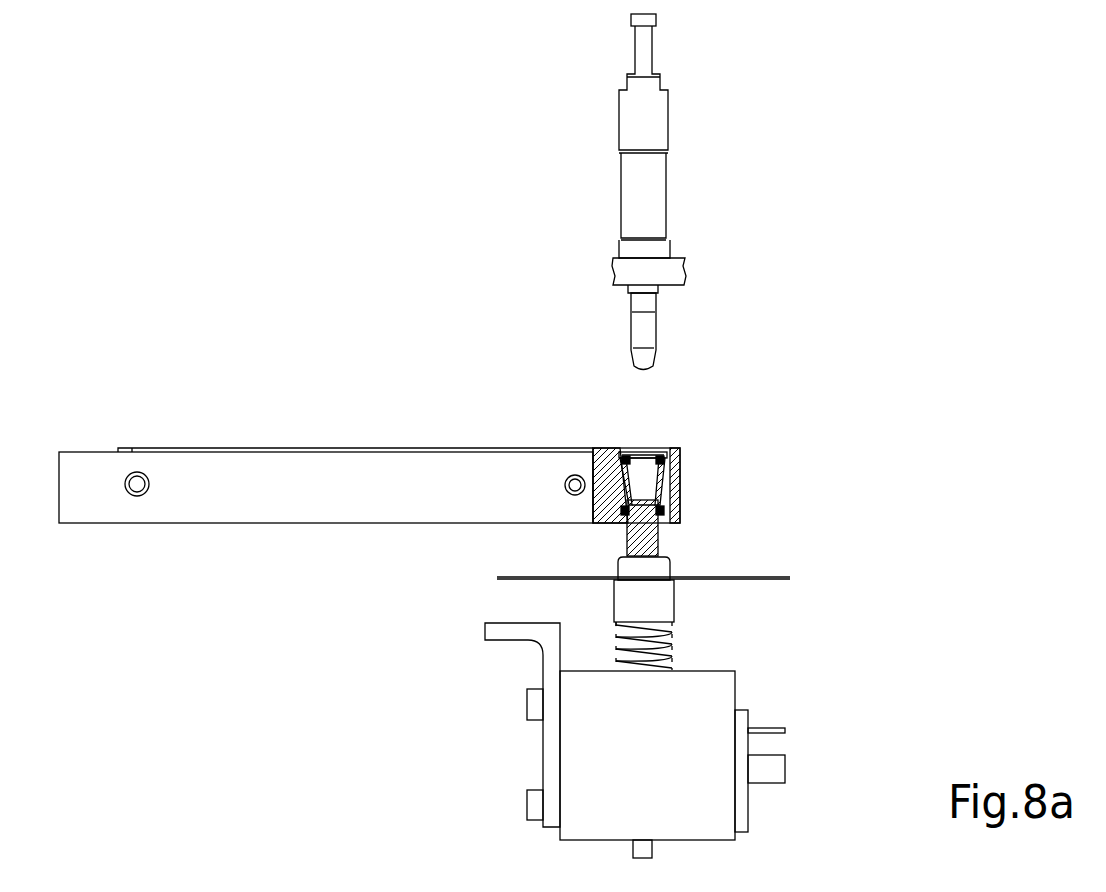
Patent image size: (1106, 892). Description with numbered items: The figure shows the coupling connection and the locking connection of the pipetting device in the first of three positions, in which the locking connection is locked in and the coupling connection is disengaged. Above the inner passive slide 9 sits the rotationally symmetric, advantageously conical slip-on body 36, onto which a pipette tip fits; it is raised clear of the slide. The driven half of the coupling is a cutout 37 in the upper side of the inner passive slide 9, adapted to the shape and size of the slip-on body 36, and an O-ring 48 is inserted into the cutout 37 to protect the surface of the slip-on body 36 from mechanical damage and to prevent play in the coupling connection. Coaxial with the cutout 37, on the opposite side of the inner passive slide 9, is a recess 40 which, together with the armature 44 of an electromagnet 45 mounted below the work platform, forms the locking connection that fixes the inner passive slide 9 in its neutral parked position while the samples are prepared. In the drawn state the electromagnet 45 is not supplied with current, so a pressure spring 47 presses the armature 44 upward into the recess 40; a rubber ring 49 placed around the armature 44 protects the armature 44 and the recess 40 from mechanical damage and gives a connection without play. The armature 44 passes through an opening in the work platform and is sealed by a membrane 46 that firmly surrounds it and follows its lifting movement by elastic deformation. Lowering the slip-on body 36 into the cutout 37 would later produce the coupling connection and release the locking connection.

The inner passive slide 9 is at (484, 467).
The slip-on body 36 is at (646, 333).
The cutout 37 is at (650, 448).
The O-ring 48 is at (680, 448).
The recess 40 is at (676, 482).
The rubber ring 49 is at (676, 510).
The armature 44 is at (672, 535).
The pressure spring 47 is at (672, 632).
The electromagnet 45 is at (690, 705).
The membrane 46 is at (510, 580).